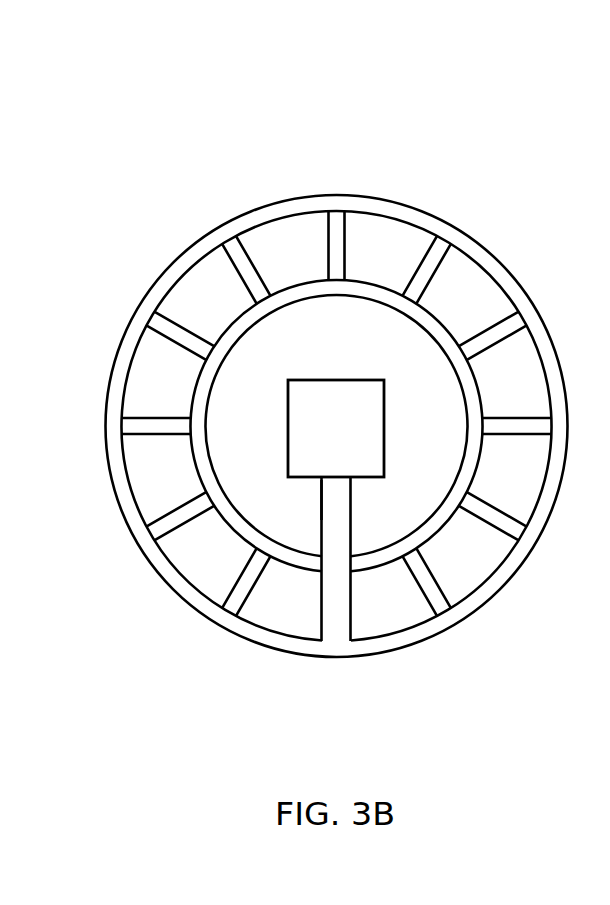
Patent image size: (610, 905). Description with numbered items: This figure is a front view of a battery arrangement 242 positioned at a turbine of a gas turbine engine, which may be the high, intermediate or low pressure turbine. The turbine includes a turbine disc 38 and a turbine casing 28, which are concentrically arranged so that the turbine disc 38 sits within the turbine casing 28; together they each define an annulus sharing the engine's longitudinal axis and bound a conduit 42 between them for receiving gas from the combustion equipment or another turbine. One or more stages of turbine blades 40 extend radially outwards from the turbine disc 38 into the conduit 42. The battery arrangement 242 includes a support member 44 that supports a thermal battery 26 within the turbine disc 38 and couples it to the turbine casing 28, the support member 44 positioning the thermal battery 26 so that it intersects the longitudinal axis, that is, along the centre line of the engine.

The battery arrangement 242 is at (421, 104).
The turbine casing 28 is at (407, 209).
The turbine blades 40 is at (263, 300).
The conduit 42 is at (400, 265).
The thermal battery 26 is at (354, 441).
The turbine disc 38 is at (376, 556).
The support member 44 is at (323, 494).